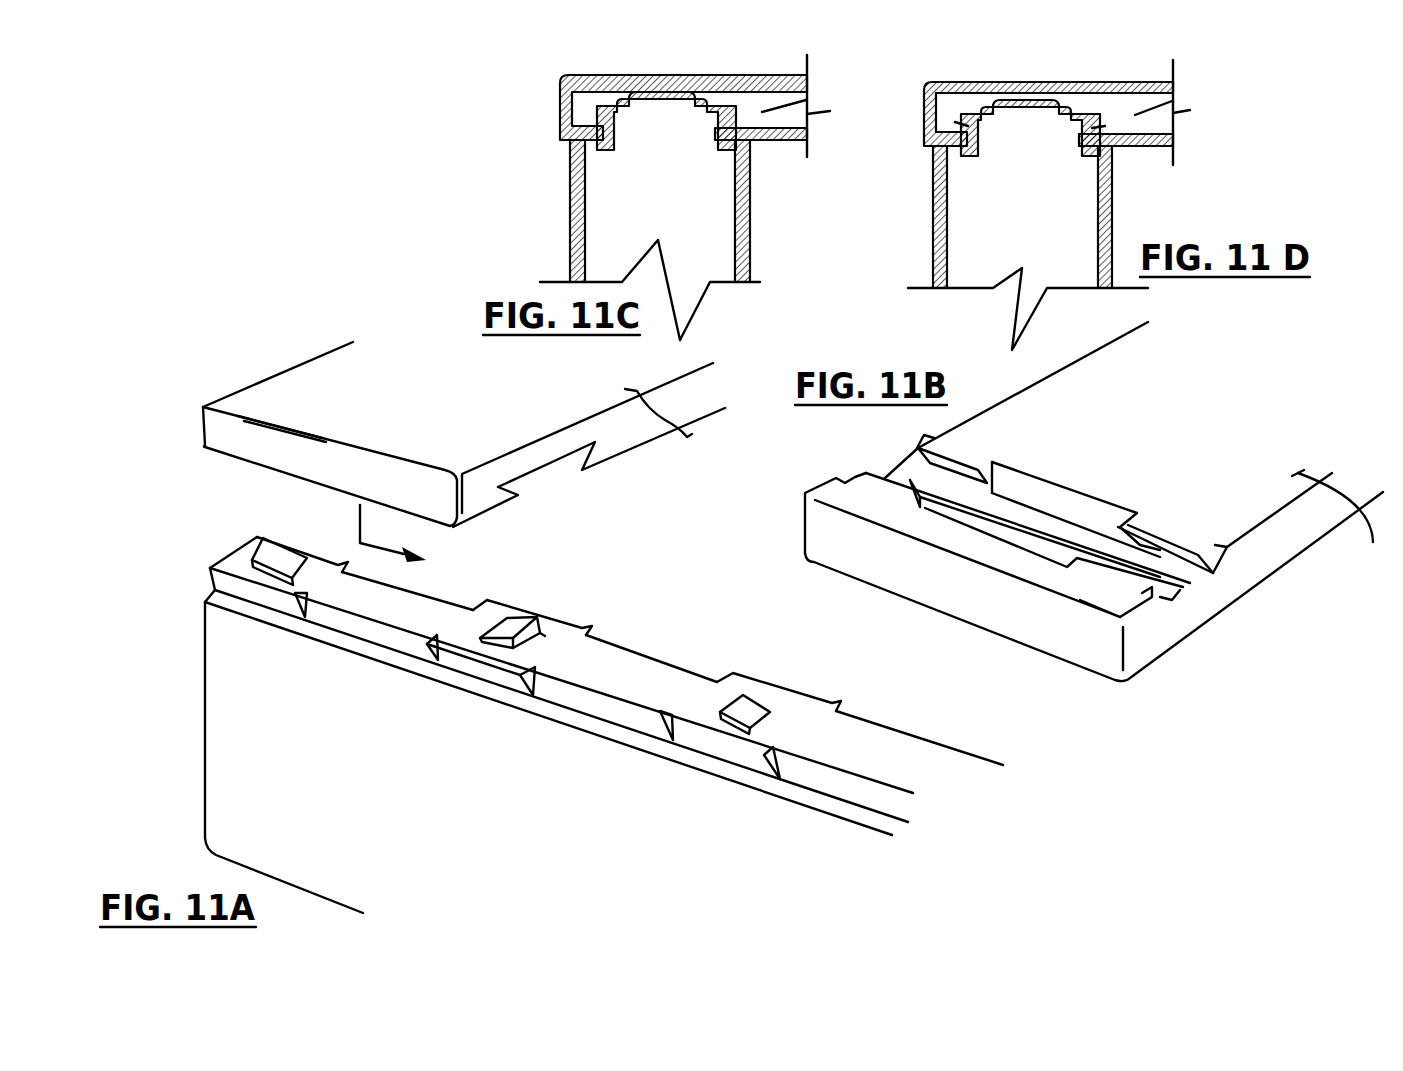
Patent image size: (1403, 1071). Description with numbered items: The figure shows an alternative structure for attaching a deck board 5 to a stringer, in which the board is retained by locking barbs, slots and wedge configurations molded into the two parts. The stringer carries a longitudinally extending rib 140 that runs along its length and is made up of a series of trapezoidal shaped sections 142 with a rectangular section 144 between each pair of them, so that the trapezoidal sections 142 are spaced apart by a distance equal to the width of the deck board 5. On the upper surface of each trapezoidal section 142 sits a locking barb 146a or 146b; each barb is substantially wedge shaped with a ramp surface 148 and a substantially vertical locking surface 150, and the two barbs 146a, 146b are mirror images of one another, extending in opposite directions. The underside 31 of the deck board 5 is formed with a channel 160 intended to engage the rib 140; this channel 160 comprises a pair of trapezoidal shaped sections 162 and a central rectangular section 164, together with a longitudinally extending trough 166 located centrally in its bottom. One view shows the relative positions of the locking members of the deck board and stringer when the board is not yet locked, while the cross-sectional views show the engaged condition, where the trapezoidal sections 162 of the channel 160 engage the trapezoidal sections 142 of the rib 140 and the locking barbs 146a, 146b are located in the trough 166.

In FIG. 11A, the deck board 5 is at (465, 434).
In FIG. 11B, the underside of the deck board 31 is at (1095, 501).
In FIG. 11A, the longitudinally extending rib 140 is at (262, 518).
In FIG. 11A, the trapezoidal shaped section 142 is at (306, 552).
In FIG. 11D, the trapezoidal shaped section 142 is at (955, 122).
In FIG. 11A, the rectangular section 144 is at (428, 596).
In FIG. 11A, the locking barb 146a is at (253, 549).
In FIG. 11A, the locking barb 146b is at (508, 647).
In FIG. 11A, the ramp surface 148 is at (305, 566).
In FIG. 11A, the locking surface 150 is at (540, 635).
In FIG. 11B, the channel 160 is at (1207, 585).
In FIG. 11B, the trapezoidal shaped section 162 is at (962, 460).
In FIG. 11C, the trapezoidal shaped section 162 is at (697, 132).
In FIG. 11D, the trapezoidal shaped section 162 is at (1053, 140).
In FIG. 11B, the central rectangular section 164 is at (1077, 492).
In FIG. 11B, the longitudinally extending trough 166 is at (1183, 588).